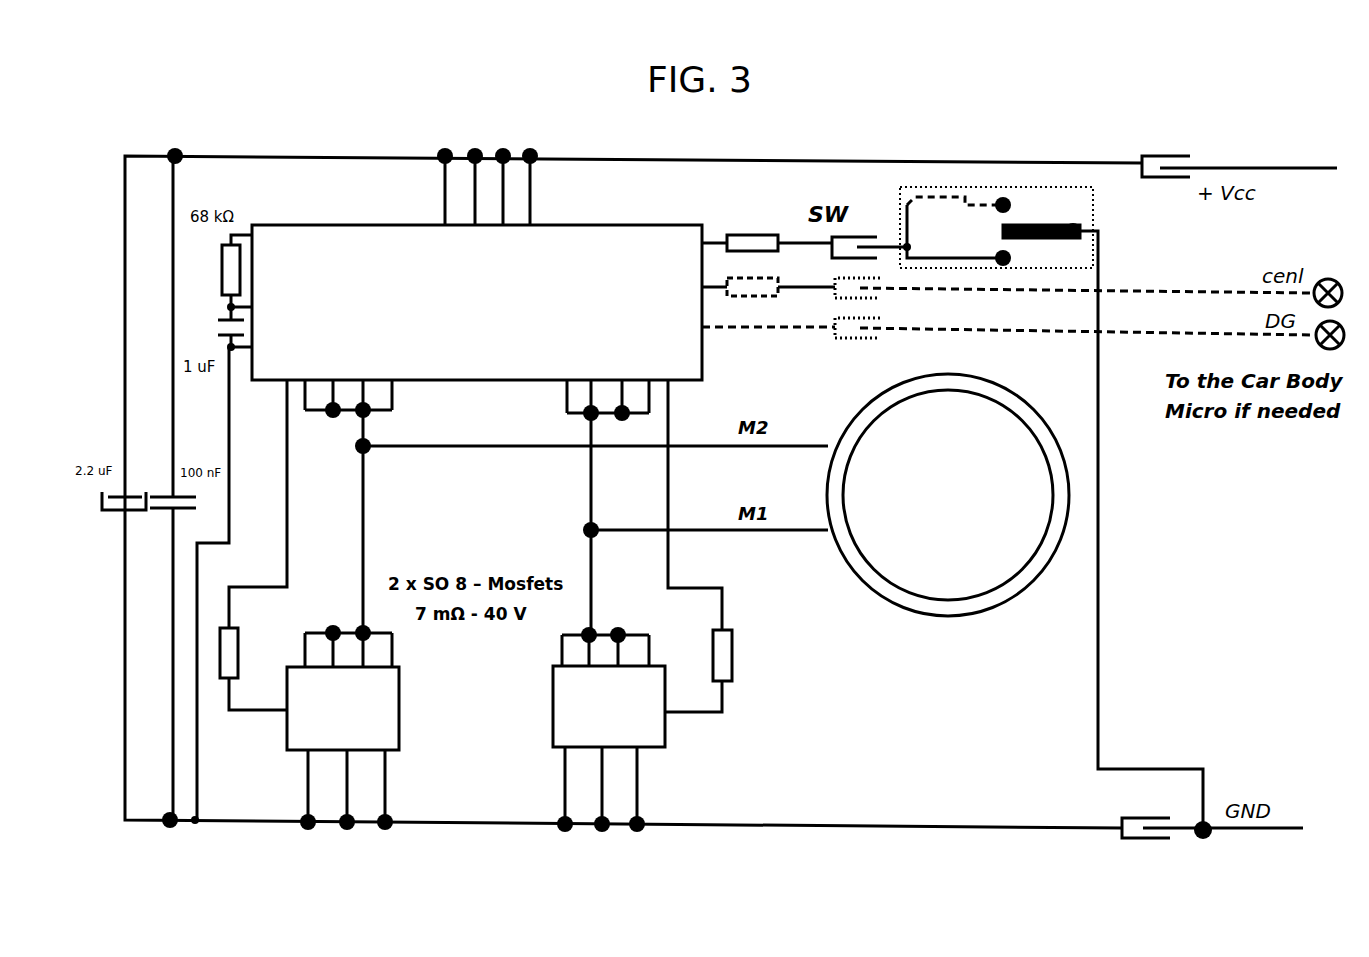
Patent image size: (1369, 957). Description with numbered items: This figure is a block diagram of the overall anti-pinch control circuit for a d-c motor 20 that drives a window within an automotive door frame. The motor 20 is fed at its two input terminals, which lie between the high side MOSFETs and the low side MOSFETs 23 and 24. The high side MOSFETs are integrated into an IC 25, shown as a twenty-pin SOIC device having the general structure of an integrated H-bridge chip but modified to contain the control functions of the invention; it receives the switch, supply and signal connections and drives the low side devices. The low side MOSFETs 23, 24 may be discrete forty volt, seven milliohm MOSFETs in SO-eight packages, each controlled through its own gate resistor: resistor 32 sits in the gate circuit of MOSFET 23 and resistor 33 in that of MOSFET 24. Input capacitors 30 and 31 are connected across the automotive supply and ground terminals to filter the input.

The d-c motor 20 is at (945, 617).
The low side MOSFET 23 is at (399, 715).
The low side MOSFET 24 is at (666, 732).
The IC 25 is at (492, 362).
The input capacitor 30 is at (112, 513).
The input capacitor 31 is at (165, 515).
The resistor 32 is at (218, 657).
The resistor 33 is at (733, 674).